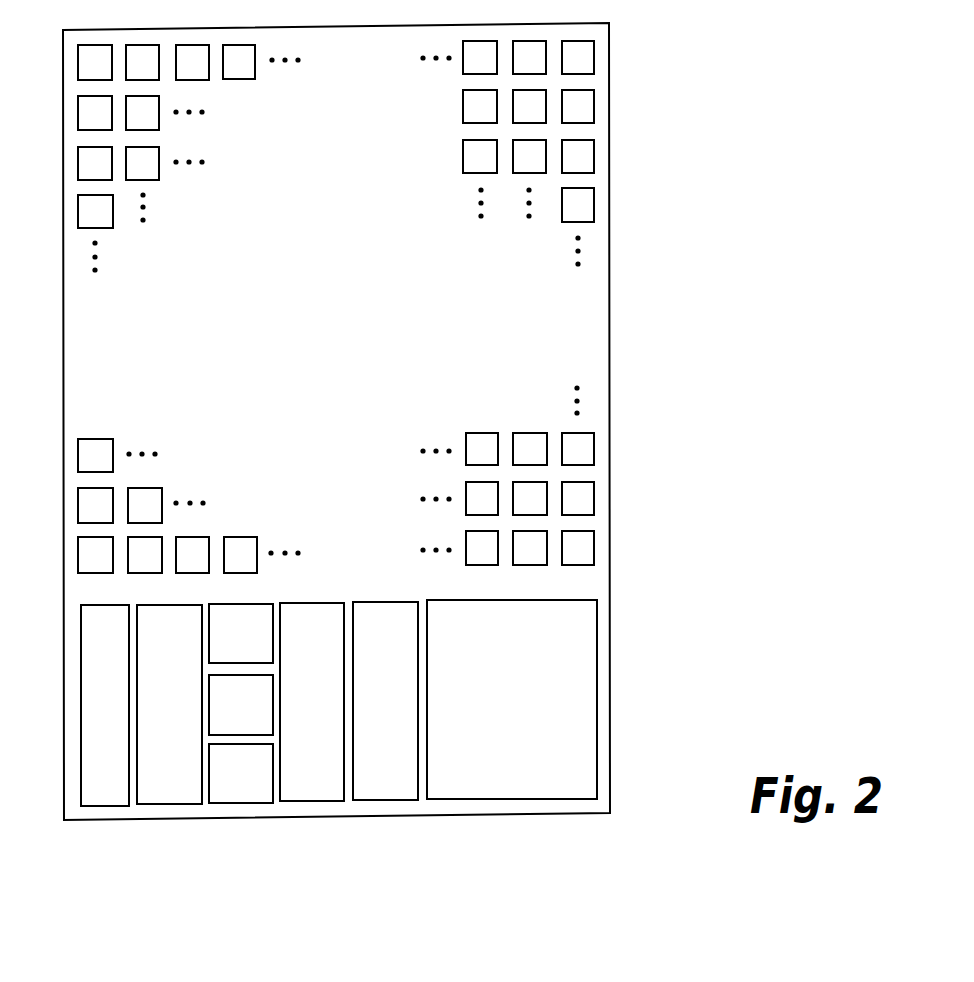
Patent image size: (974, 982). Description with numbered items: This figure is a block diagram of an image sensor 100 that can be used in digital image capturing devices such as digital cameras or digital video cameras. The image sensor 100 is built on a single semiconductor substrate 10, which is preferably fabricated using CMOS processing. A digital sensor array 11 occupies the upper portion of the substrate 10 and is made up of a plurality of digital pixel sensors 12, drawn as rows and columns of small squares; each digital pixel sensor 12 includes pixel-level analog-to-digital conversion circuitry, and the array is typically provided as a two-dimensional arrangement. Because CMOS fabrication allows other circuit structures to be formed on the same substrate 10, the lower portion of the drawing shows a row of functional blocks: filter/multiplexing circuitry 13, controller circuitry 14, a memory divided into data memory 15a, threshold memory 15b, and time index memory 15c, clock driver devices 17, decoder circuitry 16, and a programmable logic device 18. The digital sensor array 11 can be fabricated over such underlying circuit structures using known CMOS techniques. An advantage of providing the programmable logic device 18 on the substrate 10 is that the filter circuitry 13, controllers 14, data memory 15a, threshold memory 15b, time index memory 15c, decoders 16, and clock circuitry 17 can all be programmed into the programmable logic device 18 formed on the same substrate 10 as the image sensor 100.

The image sensor 100 is at (803, 86).
The semiconductor substrate 10 is at (610, 325).
The digital sensor array 11 is at (347, 330).
The digital pixel sensors 12 is at (577, 450).
The filter/multiplexing circuitry 13 is at (121, 722).
The controller circuitry 14 is at (185, 722).
The data memory 15a is at (221, 648).
The threshold memory 15b is at (221, 722).
The time index memory 15c is at (221, 792).
The decoder circuitry 16 is at (402, 713).
The clock driver devices 17 is at (328, 722).
The programmable logic device 18 is at (529, 713).